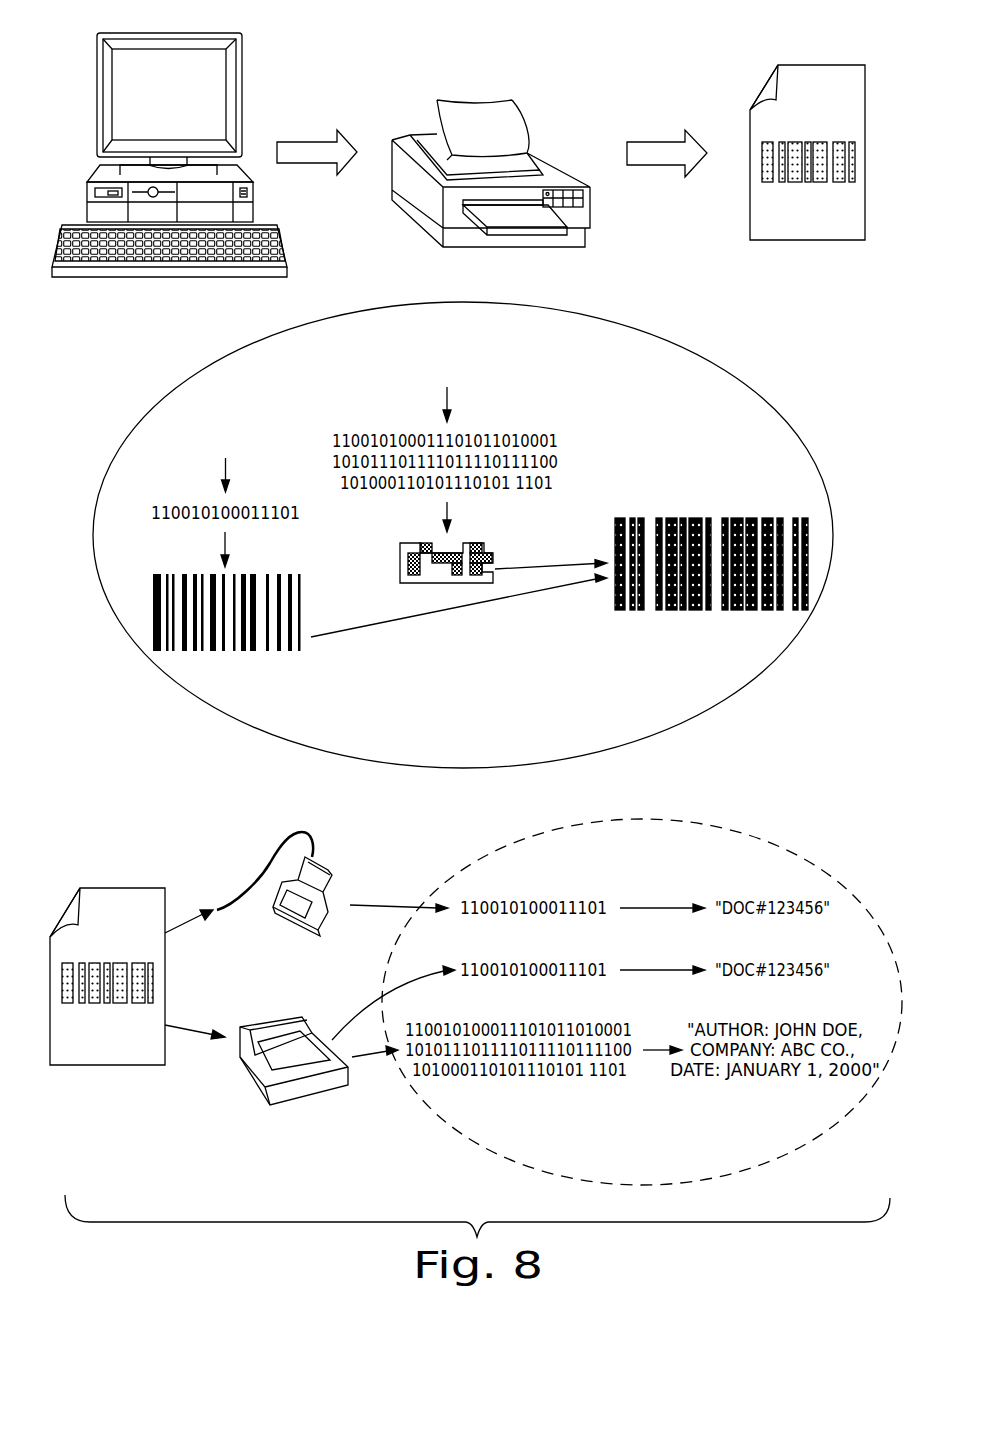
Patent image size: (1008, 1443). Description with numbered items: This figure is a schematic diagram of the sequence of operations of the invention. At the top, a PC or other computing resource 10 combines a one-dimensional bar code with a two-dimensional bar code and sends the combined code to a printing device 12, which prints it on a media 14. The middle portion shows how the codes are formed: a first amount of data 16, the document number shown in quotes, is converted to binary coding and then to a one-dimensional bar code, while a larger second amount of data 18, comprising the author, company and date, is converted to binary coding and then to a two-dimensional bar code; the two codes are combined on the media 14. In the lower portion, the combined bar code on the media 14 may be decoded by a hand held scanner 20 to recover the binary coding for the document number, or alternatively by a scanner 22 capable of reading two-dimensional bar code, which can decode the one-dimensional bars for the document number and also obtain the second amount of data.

The computing resource 10 is at (242, 68).
The printing device 12 is at (538, 152).
The media 14 is at (750, 124).
The first amount of data 16 is at (229, 422).
The second amount of data 18 is at (545, 345).
The hand held scanner 20 is at (323, 863).
The scanner 22 is at (270, 1018).